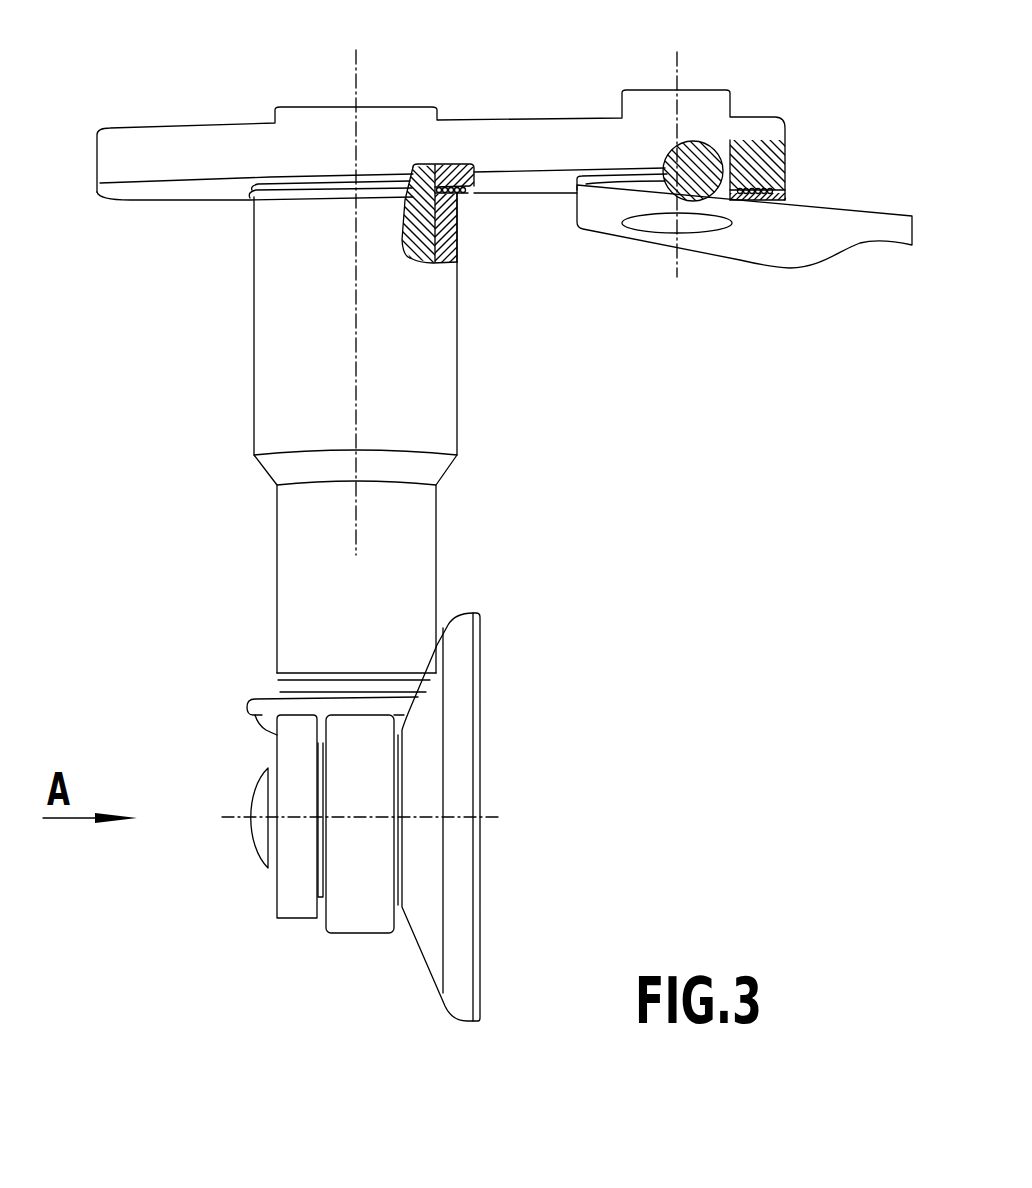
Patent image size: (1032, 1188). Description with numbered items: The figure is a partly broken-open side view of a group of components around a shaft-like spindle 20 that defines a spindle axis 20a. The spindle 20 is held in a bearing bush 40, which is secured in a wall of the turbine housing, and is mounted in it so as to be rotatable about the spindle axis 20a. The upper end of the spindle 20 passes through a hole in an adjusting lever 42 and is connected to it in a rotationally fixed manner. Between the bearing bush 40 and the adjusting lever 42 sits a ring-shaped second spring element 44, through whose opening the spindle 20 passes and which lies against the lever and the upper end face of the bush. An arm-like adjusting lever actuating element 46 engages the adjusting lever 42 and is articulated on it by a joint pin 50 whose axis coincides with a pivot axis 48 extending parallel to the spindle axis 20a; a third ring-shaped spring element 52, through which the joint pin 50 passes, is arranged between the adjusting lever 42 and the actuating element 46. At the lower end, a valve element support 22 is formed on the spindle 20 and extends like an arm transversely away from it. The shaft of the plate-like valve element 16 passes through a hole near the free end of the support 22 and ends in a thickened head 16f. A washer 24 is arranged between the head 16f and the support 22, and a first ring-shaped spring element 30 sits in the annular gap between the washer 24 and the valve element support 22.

The adjusting lever 42 is at (530, 112).
The joint pin 50 is at (697, 167).
The third ring-shaped spring element 52 is at (797, 190).
The second spring element 44 is at (468, 203).
The bearing bush 40 is at (447, 245).
The spindle 20 is at (413, 258).
The spindle axis 20a is at (355, 325).
The pivot axis 48 is at (678, 253).
The adjusting lever actuating element 46 is at (840, 276).
The plate-like valve element 16 is at (460, 703).
The thickened head 16f is at (263, 842).
The washer 24 is at (297, 893).
The first ring-shaped spring element 30 is at (320, 893).
The valve element support 22 is at (378, 908).